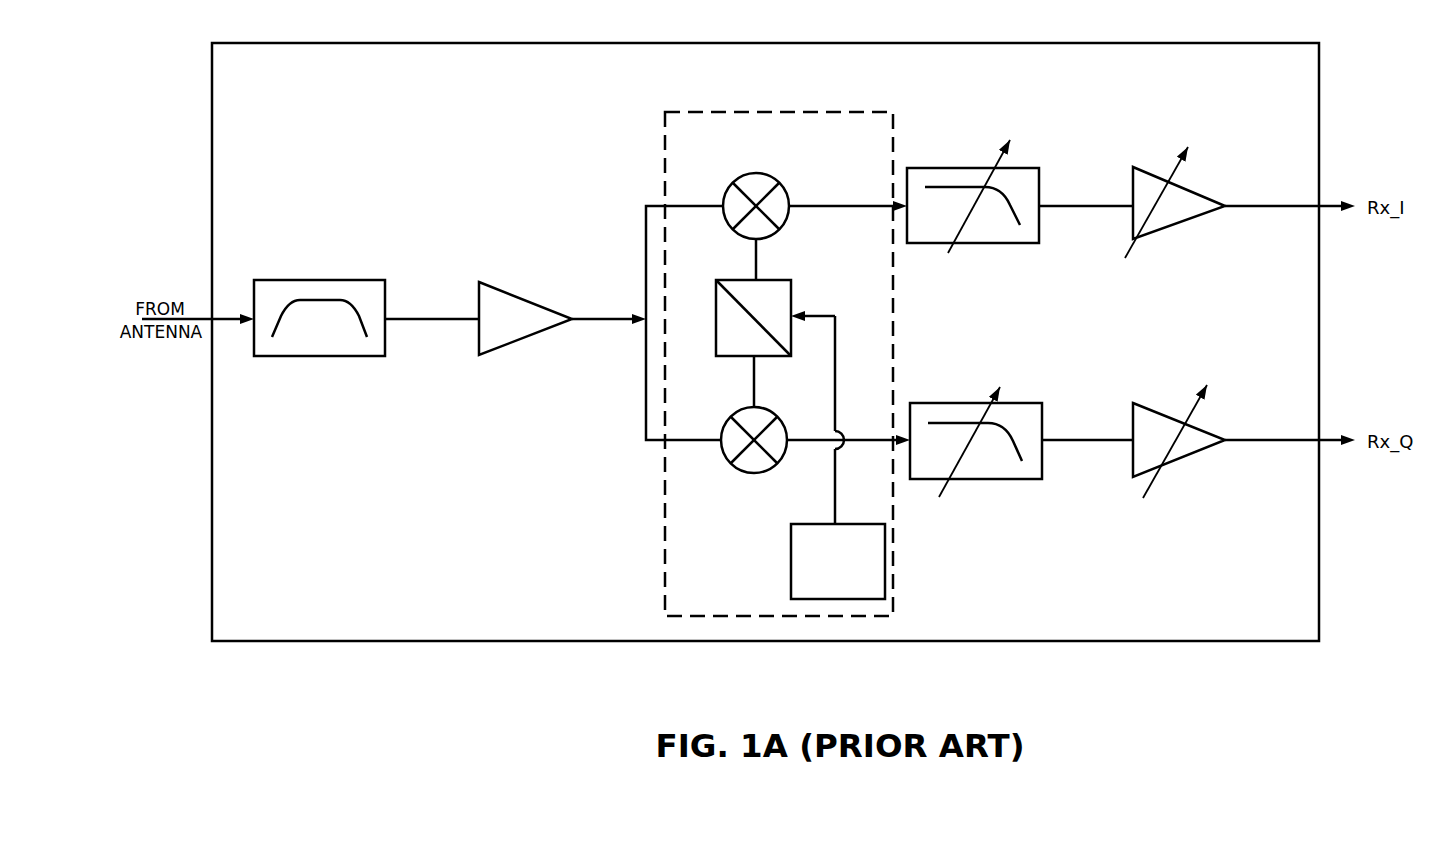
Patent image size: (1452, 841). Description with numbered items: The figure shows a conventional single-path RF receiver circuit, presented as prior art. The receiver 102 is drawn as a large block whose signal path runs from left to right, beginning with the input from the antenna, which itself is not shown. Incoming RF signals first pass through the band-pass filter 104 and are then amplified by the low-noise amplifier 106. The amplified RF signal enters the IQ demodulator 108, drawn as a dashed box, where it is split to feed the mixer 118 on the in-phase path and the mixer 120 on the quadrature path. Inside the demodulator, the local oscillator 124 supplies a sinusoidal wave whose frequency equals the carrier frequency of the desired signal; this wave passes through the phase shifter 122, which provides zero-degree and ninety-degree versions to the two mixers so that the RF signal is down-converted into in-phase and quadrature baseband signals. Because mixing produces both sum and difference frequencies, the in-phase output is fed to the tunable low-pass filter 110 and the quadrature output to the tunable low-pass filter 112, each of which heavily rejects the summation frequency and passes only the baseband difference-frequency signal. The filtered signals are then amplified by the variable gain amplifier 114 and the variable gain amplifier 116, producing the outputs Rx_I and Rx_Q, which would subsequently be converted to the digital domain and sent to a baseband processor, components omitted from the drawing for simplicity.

The receiver 102 is at (765, 365).
The band-pass filter 104 is at (310, 279).
The low-noise amplifier 106 is at (479, 282).
The IQ demodulator 108 is at (744, 359).
The tunable low-pass filter 110 is at (963, 167).
The tunable low-pass filter 112 is at (963, 480).
The variable gain amplifier 114 is at (1133, 167).
The variable gain amplifier 116 is at (1187, 457).
The mixer 118 is at (755, 172).
The mixer 120 is at (756, 473).
The 90°/0° phase shifter 122 is at (791, 280).
The local oscillator 124 is at (838, 455).